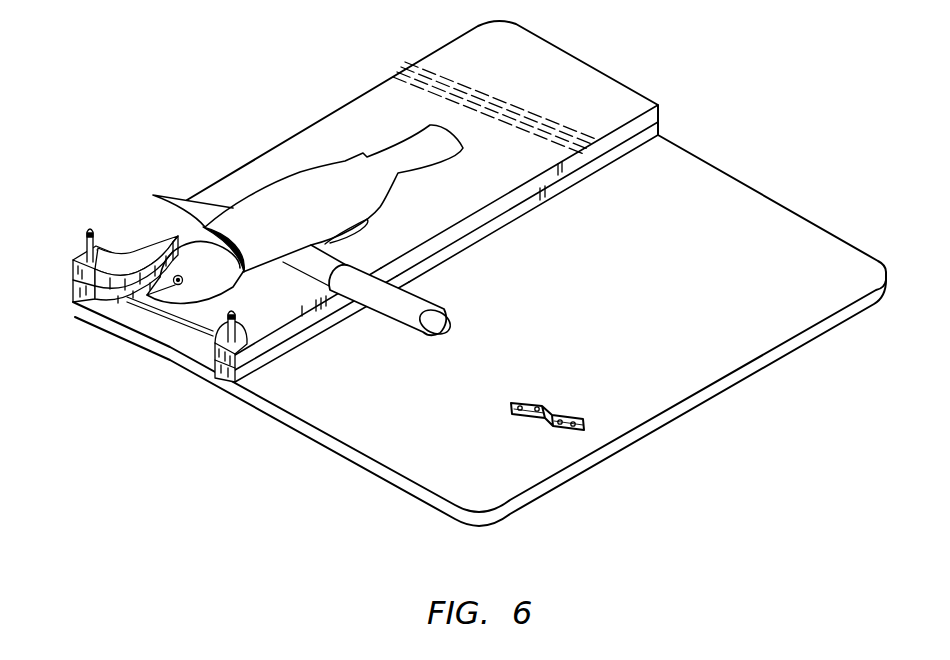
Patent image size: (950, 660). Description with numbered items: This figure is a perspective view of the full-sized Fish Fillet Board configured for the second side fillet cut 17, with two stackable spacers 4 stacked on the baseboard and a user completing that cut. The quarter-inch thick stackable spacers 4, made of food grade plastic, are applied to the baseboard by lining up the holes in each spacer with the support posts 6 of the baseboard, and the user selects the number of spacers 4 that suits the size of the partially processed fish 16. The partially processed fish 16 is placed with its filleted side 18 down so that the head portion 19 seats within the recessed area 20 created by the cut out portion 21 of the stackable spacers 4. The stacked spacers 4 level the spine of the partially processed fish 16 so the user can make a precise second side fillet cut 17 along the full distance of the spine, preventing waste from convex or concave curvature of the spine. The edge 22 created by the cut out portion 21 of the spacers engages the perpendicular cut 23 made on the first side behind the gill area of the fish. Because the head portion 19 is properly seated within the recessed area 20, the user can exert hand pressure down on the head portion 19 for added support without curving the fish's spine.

The stackable spacer 4 is at (497, 201).
The support post 6 is at (247, 305).
The partially processed fish 16 is at (285, 213).
The second side fillet cut 17 is at (275, 262).
The filleted side 18 is at (260, 263).
The head portion 19 is at (140, 300).
The recessed area 20 is at (195, 320).
The cut out portion 21 is at (145, 258).
The edge 22 is at (238, 264).
The perpendicular cut 23 is at (241, 290).